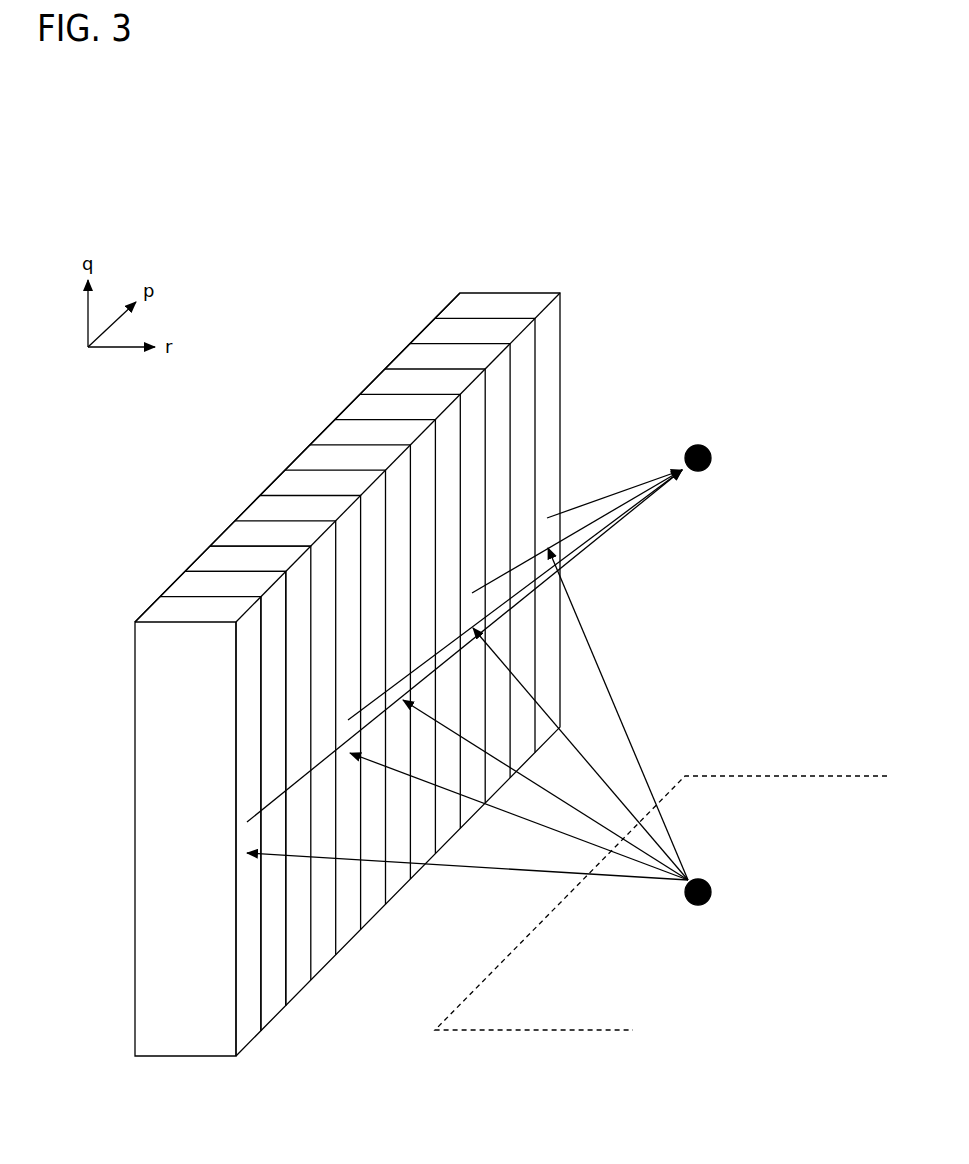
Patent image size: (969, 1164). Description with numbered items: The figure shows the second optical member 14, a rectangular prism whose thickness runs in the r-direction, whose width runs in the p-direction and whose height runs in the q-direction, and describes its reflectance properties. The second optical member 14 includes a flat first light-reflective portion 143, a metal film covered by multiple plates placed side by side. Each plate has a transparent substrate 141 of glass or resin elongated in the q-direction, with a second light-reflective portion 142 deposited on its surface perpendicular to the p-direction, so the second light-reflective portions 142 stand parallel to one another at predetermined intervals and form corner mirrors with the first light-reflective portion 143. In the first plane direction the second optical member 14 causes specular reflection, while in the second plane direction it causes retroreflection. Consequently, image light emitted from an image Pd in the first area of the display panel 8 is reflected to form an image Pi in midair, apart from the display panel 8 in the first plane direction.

The second optical member 14 is at (310, 416).
The transparent substrate 141 is at (212, 565).
The second light-reflective portion 142 is at (258, 547).
The first light-reflective portion 143 is at (253, 502).
The display panel 8 is at (792, 776).
The image Pi is at (708, 448).
The image Pd is at (708, 884).